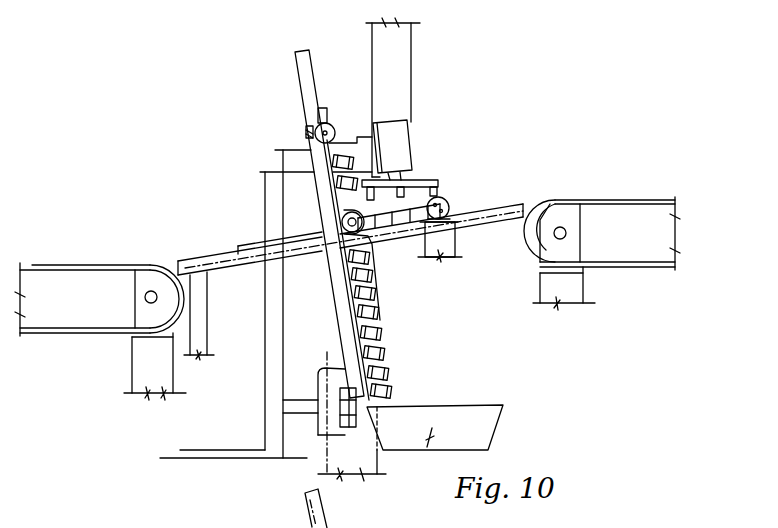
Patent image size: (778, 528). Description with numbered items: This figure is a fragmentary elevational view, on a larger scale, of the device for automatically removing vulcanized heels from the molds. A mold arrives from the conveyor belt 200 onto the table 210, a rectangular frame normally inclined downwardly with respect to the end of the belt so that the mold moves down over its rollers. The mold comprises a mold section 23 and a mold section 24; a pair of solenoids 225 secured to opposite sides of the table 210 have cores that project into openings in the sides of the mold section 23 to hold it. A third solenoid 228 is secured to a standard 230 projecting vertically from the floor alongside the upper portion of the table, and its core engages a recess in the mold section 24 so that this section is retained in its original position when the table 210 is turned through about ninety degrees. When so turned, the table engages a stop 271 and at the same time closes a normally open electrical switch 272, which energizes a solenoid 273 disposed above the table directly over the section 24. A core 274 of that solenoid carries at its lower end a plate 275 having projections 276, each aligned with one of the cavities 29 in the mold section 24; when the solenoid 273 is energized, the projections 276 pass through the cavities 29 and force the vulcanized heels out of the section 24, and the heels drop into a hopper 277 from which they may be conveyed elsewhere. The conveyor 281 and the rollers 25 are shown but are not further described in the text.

The conveyor belt 200 is at (598, 200).
The table 210 is at (305, 93).
The mold section 23 is at (325, 122).
The solenoids 225 is at (332, 127).
The solenoid 273 is at (412, 133).
The core 274 is at (413, 178).
The plate 275 is at (436, 183).
The projections 276 is at (440, 199).
The cavities 29 is at (404, 204).
The mold section 24 is at (449, 204).
The third solenoid 228 is at (448, 214).
The standard 230 is at (452, 247).
The conveyor 281 is at (82, 265).
The stop 271 is at (345, 373).
The switch 272 is at (362, 415).
The hopper 277 is at (490, 413).
The rollers 25 is at (376, 323).